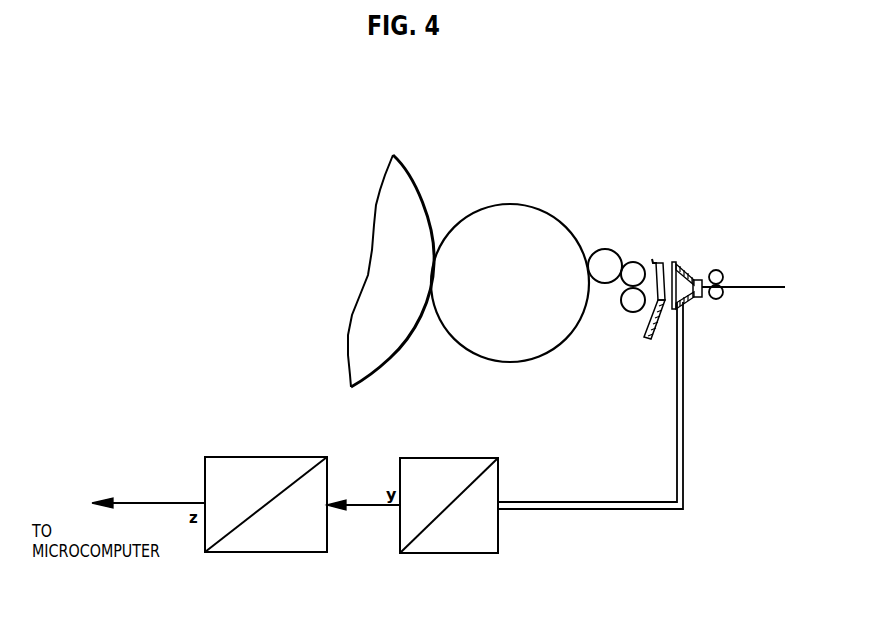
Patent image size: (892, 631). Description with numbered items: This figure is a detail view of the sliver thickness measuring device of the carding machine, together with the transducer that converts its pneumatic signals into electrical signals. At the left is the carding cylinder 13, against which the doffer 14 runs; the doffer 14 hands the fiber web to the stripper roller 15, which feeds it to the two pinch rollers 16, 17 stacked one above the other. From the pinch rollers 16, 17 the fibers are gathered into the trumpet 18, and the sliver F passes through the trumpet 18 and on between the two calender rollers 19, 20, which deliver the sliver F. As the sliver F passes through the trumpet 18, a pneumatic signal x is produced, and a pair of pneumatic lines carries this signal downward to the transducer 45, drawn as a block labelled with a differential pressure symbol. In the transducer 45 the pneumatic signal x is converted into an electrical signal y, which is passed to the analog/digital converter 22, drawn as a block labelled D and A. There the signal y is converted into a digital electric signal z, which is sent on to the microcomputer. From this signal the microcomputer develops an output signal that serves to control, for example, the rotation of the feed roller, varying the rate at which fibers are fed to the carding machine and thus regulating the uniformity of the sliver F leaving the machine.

The carding cylinder 13 is at (403, 181).
The doffer 14 is at (515, 217).
The stripper roller 15 is at (598, 257).
The pinch roller 16 is at (630, 265).
The pinch roller 17 is at (631, 310).
The trumpet 18 is at (683, 266).
The calender roller 19 is at (718, 272).
The calender roller 20 is at (718, 300).
The sliver F is at (760, 290).
The analog/digital converter 22 is at (258, 546).
The transducer 45 is at (435, 546).